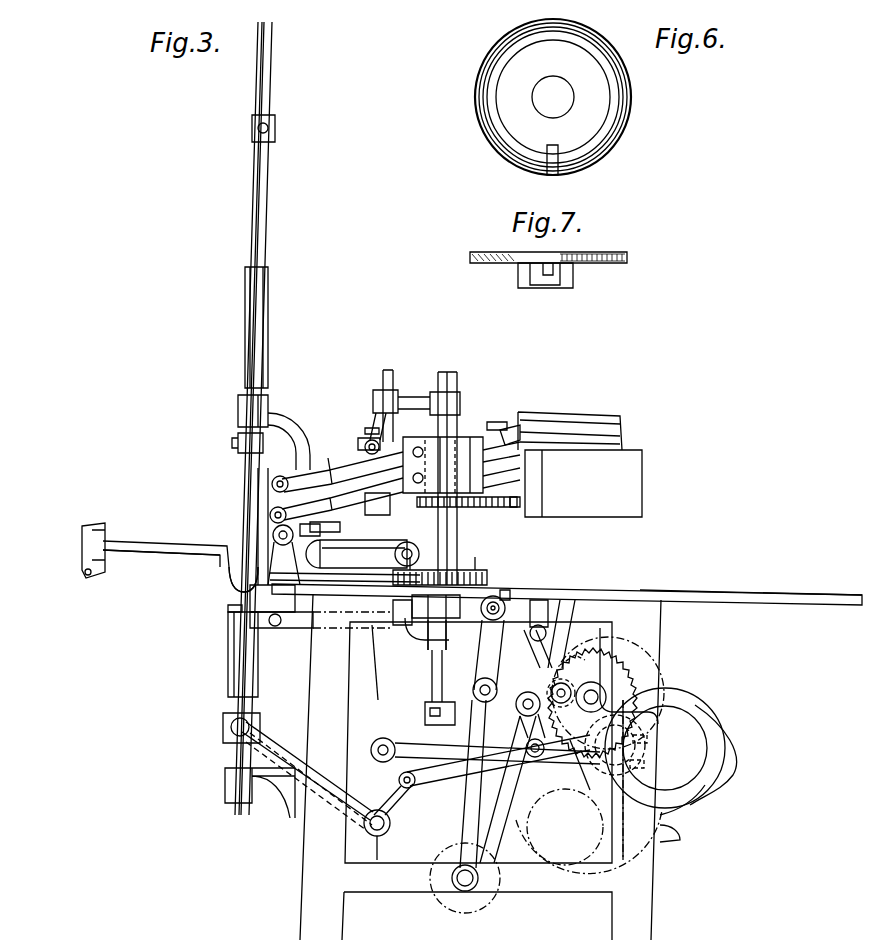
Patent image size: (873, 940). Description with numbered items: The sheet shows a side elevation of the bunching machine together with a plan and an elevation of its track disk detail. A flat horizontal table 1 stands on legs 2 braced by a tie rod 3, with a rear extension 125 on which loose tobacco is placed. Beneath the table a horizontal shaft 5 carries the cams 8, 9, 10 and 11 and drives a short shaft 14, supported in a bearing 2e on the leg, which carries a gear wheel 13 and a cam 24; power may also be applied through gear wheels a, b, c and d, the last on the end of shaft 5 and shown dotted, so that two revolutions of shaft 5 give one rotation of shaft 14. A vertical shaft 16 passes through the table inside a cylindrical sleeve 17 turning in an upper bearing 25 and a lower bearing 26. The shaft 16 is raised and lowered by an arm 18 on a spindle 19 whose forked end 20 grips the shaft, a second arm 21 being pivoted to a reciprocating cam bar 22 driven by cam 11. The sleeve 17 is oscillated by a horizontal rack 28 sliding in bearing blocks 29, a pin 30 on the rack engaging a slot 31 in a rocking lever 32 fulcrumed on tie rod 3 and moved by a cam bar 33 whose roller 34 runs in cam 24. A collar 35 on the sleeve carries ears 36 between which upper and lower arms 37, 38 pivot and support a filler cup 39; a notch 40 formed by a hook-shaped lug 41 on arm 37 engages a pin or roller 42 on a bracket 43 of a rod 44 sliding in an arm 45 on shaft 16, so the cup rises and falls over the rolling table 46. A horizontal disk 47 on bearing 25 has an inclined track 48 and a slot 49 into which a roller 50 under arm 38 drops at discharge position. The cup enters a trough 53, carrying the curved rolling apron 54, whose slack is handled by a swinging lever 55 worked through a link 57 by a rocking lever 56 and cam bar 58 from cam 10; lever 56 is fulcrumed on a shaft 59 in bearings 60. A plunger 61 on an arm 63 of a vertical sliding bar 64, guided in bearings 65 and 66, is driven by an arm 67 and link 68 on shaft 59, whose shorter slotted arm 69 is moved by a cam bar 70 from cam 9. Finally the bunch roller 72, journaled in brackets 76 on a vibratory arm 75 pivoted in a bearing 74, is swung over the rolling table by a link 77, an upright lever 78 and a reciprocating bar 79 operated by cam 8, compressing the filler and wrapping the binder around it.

In FIG. 3, the table 1 is at (602, 584).
In FIG. 3, the leg 2 is at (676, 855).
In FIG. 3, the tie rod 3 is at (462, 880).
In FIG. 3, the horizontal shaft 5 is at (635, 755).
In FIG. 3, the cam 8 is at (733, 780).
In FIG. 3, the cam 9 is at (676, 830).
In FIG. 3, the cam 10 is at (700, 795).
In FIG. 3, the cam disk 11 is at (685, 745).
In FIG. 3, the gear wheel 13 is at (563, 634).
In FIG. 3, the short shaft 14 is at (594, 692).
In FIG. 3, the vertical shaft 16 is at (458, 380).
In FIG. 3, the cylindrical sleeve 17 is at (458, 430).
In FIG. 3, the arm 18 is at (462, 702).
In FIG. 3, the spindle 19 is at (518, 710).
In FIG. 3, the forked end 20 is at (425, 722).
In FIG. 3, the second arm 21 is at (533, 758).
In FIG. 3, the reciprocating cam bar 22 is at (555, 755).
In FIG. 3, the cam 24 is at (612, 642).
In FIG. 3, the bearing 25 is at (462, 550).
In FIG. 3, the second bearing 26 is at (425, 640).
In FIG. 3, the horizontal rack 28 is at (440, 594).
In FIG. 3, the bearing blocks 29 is at (393, 607).
In FIG. 3, the pin 30 is at (508, 596).
In FIG. 3, the slot 31 is at (498, 596).
In FIG. 3, the vertical rocking lever 32 is at (489, 655).
In FIG. 3, the reciprocating cam bar 33 is at (508, 690).
In FIG. 3, the roller 34 is at (564, 685).
In FIG. 3, the collar 35 is at (430, 440).
In FIG. 3, the ears 36 is at (433, 465).
In FIG. 3, the upper arm 37 is at (396, 465).
In FIG. 3, the lower arm 38 is at (395, 495).
In FIG. 3, the cup or receptacle 39 is at (232, 512).
In FIG. 3, the notch 40 is at (364, 446).
In FIG. 3, the hook-shaped lug 41 is at (368, 433).
In FIG. 3, the pin or roller 42 is at (360, 437).
In FIG. 3, the bracket 43 is at (372, 420).
In FIG. 3, the rod 44 is at (394, 390).
In FIG. 3, the arm 45 is at (412, 403).
In FIG. 3, the rolling table 46 is at (170, 550).
In FIG. 6, the horizontal disk 47 is at (553, 97).
In FIG. 7, the horizontal disk 47 is at (597, 264).
In FIG. 3, the horizontal disk 47 is at (490, 508).
In FIG. 6, the inclined track 48 is at (482, 108).
In FIG. 7, the inclined track 48 is at (490, 247).
In FIG. 6, the slot 49 is at (555, 162).
In FIG. 7, the slot 49 is at (546, 288).
In FIG. 3, the roller 50 is at (380, 510).
In FIG. 3, the trough 53 is at (232, 595).
In FIG. 3, the curved rolling apron 54 is at (160, 547).
In FIG. 3, the horizontally swinging lever 55 is at (332, 530).
In FIG. 3, the rocking lever 56 is at (369, 662).
In FIG. 3, the link 57 is at (352, 560).
In FIG. 3, the cam bar 58 is at (430, 755).
In FIG. 3, the shaft 59 is at (392, 824).
In FIG. 3, the bearings 60 is at (380, 848).
In FIG. 3, the plunger 61 is at (269, 324).
In FIG. 3, the arm 63 is at (276, 130).
In FIG. 3, the vertical sliding bar 64 is at (253, 231).
In FIG. 3, the bearing 65 is at (238, 406).
In FIG. 3, the bearing 66 is at (225, 790).
In FIG. 3, the arm 67 is at (296, 748).
In FIG. 3, the link 68 is at (230, 672).
In FIG. 3, the second arm 69 is at (410, 800).
In FIG. 3, the reciprocating cam bar 70 is at (450, 775).
In FIG. 3, the bunch roller 72 is at (272, 532).
In FIG. 3, the bearing 74 is at (222, 725).
In FIG. 3, the vibratory arm 75 is at (228, 610).
In FIG. 3, the upstanding brackets 76 is at (272, 598).
In FIG. 3, the link 77 is at (293, 630).
In FIG. 3, the upright lever 78 is at (532, 649).
In FIG. 3, the reciprocating bar 79 is at (580, 765).
In FIG. 3, the extension 125 is at (803, 595).
In FIG. 3, the slot 2e is at (592, 690).
In FIG. 3, the gear wheel a is at (478, 905).
In FIG. 3, the gear wheel b is at (558, 902).
In FIG. 3, the gear wheel c is at (565, 827).
In FIG. 3, the gear wheel d is at (615, 805).